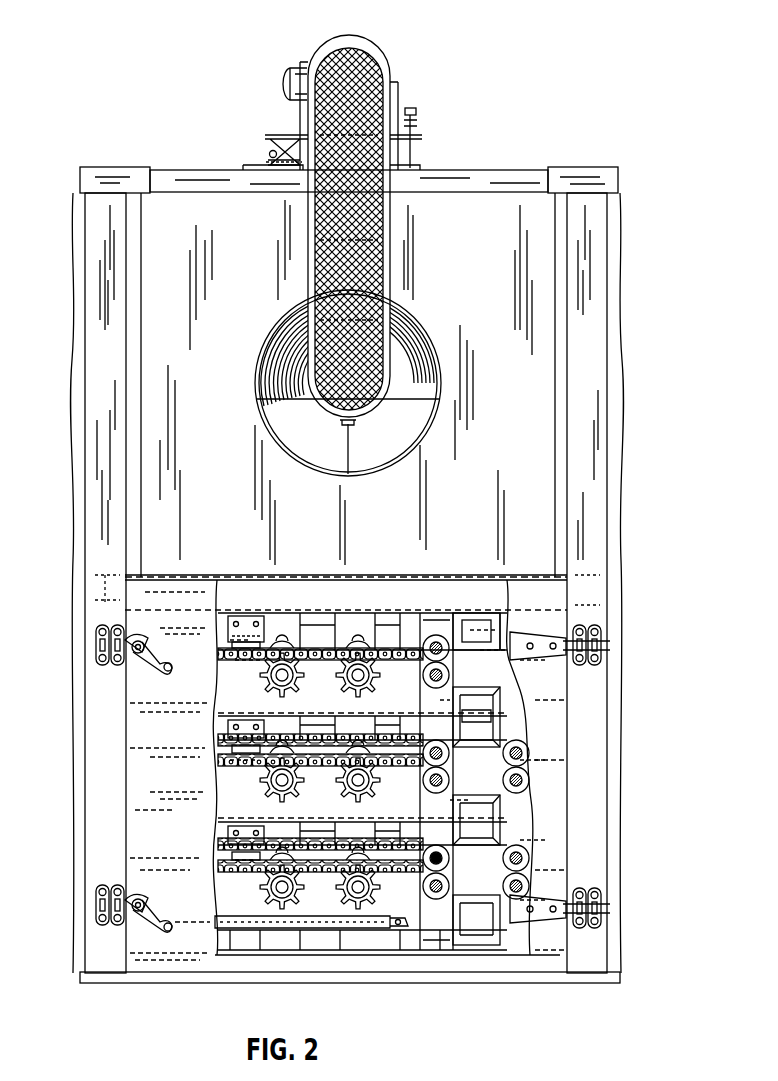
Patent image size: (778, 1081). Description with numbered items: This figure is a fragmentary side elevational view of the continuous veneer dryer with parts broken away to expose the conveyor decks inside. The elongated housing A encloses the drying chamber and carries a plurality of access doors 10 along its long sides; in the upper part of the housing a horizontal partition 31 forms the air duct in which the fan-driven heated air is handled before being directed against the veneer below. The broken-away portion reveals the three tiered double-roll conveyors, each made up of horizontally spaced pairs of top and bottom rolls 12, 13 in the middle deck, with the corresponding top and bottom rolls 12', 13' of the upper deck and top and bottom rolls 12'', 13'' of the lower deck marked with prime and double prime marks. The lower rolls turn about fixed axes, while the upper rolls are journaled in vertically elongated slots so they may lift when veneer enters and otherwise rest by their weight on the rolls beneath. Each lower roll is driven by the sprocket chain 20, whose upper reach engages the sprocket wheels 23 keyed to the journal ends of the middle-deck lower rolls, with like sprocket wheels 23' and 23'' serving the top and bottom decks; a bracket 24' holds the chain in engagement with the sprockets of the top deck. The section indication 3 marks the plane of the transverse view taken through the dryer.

The access door 10 is at (167, 833).
The horizontal partition 31 is at (452, 578).
The housing A is at (214, 168).
The section line 3 is at (420, 998).
The sprocket chain 20 is at (328, 840).
The bracket 24' is at (247, 704).
The sprocket wheel 23 is at (306, 778).
The sprocket wheel 23' is at (320, 673).
The sprocket wheel 23'' is at (320, 878).
The top roll 12 is at (476, 744).
The top roll 12' is at (451, 653).
The top roll 12'' is at (477, 847).
The bottom roll 13 is at (476, 774).
The bottom roll 13' is at (436, 688).
The bottom roll 13'' is at (476, 881).